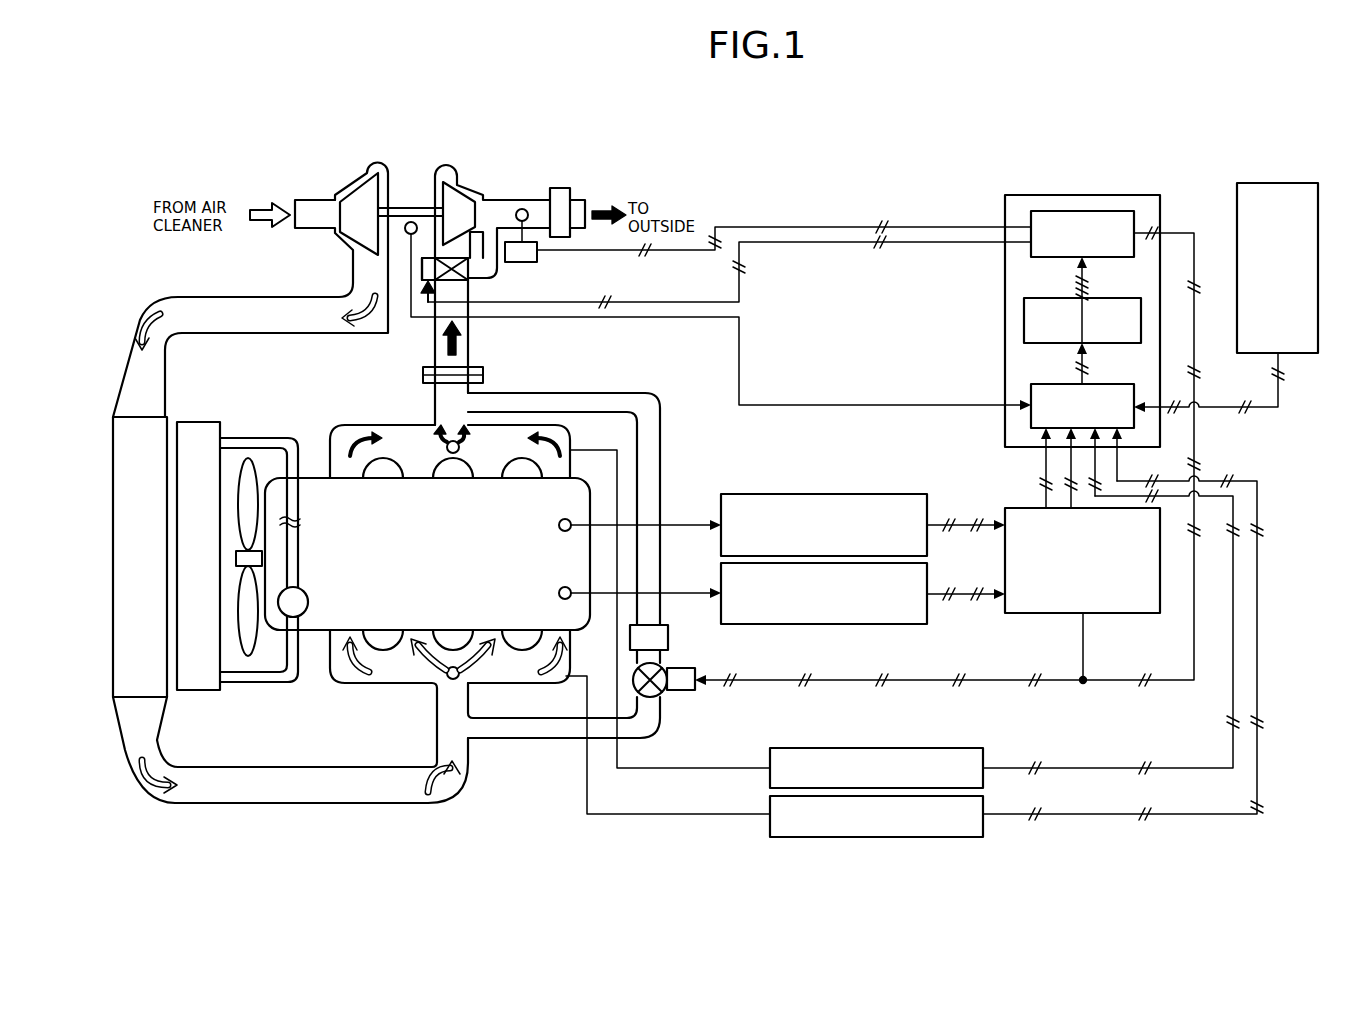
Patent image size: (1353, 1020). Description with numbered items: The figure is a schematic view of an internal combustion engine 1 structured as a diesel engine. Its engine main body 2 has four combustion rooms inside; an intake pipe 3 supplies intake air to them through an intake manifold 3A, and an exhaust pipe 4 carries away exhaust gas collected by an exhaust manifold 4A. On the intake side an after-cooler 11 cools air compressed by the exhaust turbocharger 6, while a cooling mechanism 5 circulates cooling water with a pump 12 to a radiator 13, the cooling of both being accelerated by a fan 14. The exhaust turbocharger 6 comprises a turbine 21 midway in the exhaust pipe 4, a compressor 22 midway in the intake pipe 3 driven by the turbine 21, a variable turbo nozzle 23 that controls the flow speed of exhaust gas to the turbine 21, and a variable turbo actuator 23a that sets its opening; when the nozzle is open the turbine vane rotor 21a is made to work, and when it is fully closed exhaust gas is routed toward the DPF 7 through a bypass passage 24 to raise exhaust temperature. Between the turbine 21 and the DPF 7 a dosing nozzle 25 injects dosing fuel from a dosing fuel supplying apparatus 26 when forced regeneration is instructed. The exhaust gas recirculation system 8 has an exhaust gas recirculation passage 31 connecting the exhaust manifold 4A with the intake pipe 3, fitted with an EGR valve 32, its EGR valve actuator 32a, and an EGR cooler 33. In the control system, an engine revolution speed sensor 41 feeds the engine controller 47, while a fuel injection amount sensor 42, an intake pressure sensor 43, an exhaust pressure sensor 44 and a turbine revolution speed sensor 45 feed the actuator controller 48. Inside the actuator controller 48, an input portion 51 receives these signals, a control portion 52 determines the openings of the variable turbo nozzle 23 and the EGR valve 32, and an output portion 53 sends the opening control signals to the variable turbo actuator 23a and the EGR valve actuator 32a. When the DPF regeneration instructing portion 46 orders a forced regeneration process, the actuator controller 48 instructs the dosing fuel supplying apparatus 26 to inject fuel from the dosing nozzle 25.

The internal combustion engine 1 is at (892, 130).
The engine main body 2 is at (578, 508).
The intake pipe 3 is at (280, 770).
The intake manifold 3A is at (395, 683).
The exhaust pipe 4 is at (470, 344).
The exhaust manifold 4A is at (405, 437).
The cooling mechanism 5 is at (256, 398).
The exhaust turbocharger 6 is at (474, 133).
The DPF 7 is at (562, 188).
The exhaust gas recirculation system 8 is at (678, 428).
The after-cooler 11 is at (128, 668).
The pump 12 is at (309, 602).
The radiator 13 is at (200, 680).
The fan 14 is at (251, 480).
The turbine 21 is at (452, 166).
The turbine vane rotor 21a is at (462, 190).
The compressor 22 is at (380, 162).
The variable turbo nozzle 23 is at (448, 282).
The variable turbo actuator 23a is at (422, 268).
The bypass passage 24 is at (493, 273).
The dosing nozzle 25 is at (522, 208).
The dosing fuel supplying apparatus 26 is at (540, 260).
The exhaust gas recirculation passage 31 is at (578, 393).
The EGR valve 32 is at (662, 695).
The EGR valve actuator 32a is at (683, 690).
The EGR cooler 33 is at (668, 640).
The engine revolution speed sensor 41 is at (928, 494).
The fuel injection amount sensor 42 is at (928, 564).
The intake pressure sensor 43 is at (985, 800).
The exhaust pressure sensor 44 is at (985, 748).
The turbine revolution speed sensor 45 is at (411, 222).
The DPF regeneration instructing portion 46 is at (1280, 168).
The engine controller 47 is at (1120, 620).
The actuator controller 48 is at (1005, 286).
The input portion 51 is at (1031, 397).
The control portion 52 is at (1024, 322).
The output portion 53 is at (1087, 211).